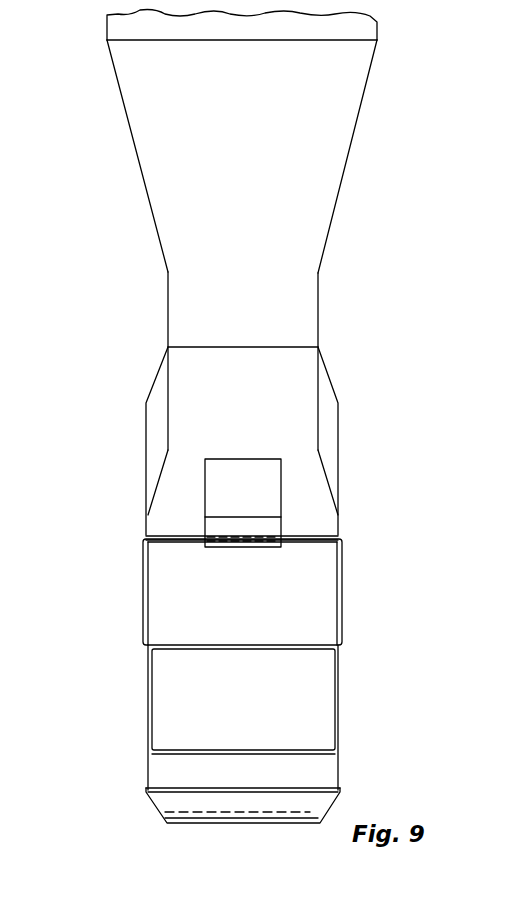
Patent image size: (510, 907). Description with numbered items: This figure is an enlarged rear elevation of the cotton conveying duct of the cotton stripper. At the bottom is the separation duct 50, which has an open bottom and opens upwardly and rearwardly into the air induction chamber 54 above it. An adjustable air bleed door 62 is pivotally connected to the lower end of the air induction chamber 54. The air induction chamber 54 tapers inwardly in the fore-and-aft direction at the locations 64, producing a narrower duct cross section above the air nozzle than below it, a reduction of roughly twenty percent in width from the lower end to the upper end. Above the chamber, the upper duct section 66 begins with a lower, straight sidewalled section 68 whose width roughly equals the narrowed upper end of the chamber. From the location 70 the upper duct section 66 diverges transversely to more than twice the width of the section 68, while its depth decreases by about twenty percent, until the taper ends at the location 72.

The location at the end of the taper 72 is at (107, 40).
The upper duct section 66 is at (306, 161).
The location where the upper duct section begins to diverge 70 is at (165, 272).
The lower straight sidewalled section 68 is at (320, 290).
The tapered locations of the air induction chamber 64 is at (157, 425).
The adjustable air bleed door 62 is at (238, 618).
The air induction chamber 54 is at (342, 577).
The separation duct 50 is at (340, 697).